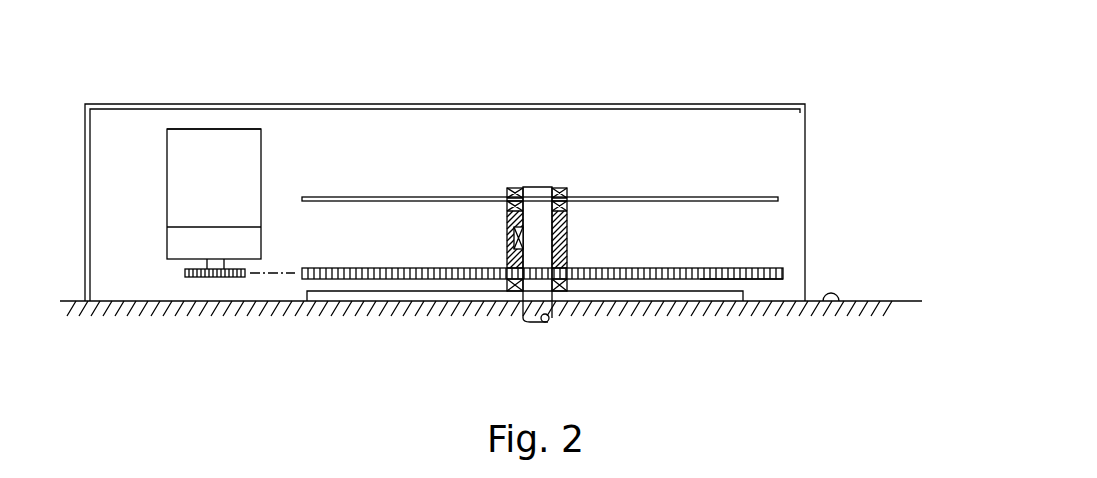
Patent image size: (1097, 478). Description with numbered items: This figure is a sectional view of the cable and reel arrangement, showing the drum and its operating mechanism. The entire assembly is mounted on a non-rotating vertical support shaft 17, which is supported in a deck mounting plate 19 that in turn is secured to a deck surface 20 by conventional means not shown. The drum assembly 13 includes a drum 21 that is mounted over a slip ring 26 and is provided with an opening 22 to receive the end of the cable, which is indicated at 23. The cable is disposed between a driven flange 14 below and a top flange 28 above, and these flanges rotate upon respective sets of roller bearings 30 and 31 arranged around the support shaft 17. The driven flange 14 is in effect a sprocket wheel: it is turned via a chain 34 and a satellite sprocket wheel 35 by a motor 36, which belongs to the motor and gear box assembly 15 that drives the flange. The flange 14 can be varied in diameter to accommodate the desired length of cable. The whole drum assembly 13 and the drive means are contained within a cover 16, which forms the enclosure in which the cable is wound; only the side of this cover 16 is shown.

The drum assembly 13 is at (576, 246).
The flange 14 is at (748, 280).
The motor and gear box assembly 15 is at (236, 124).
The cover 16 is at (85, 152).
The vertical support shaft 17 is at (546, 318).
The deck mounting plate 19 is at (647, 293).
The deck surface 20 is at (839, 301).
The drum 21 is at (570, 232).
The opening 22 is at (510, 248).
The cable end 23 is at (507, 232).
The slip ring 26 is at (537, 192).
The top flange 28 is at (740, 197).
The roller bearings 30 is at (504, 283).
The roller bearings 31 is at (507, 202).
The chain 34 is at (350, 272).
The satellite sprocket wheel 35 is at (197, 275).
The motor 36 is at (197, 152).